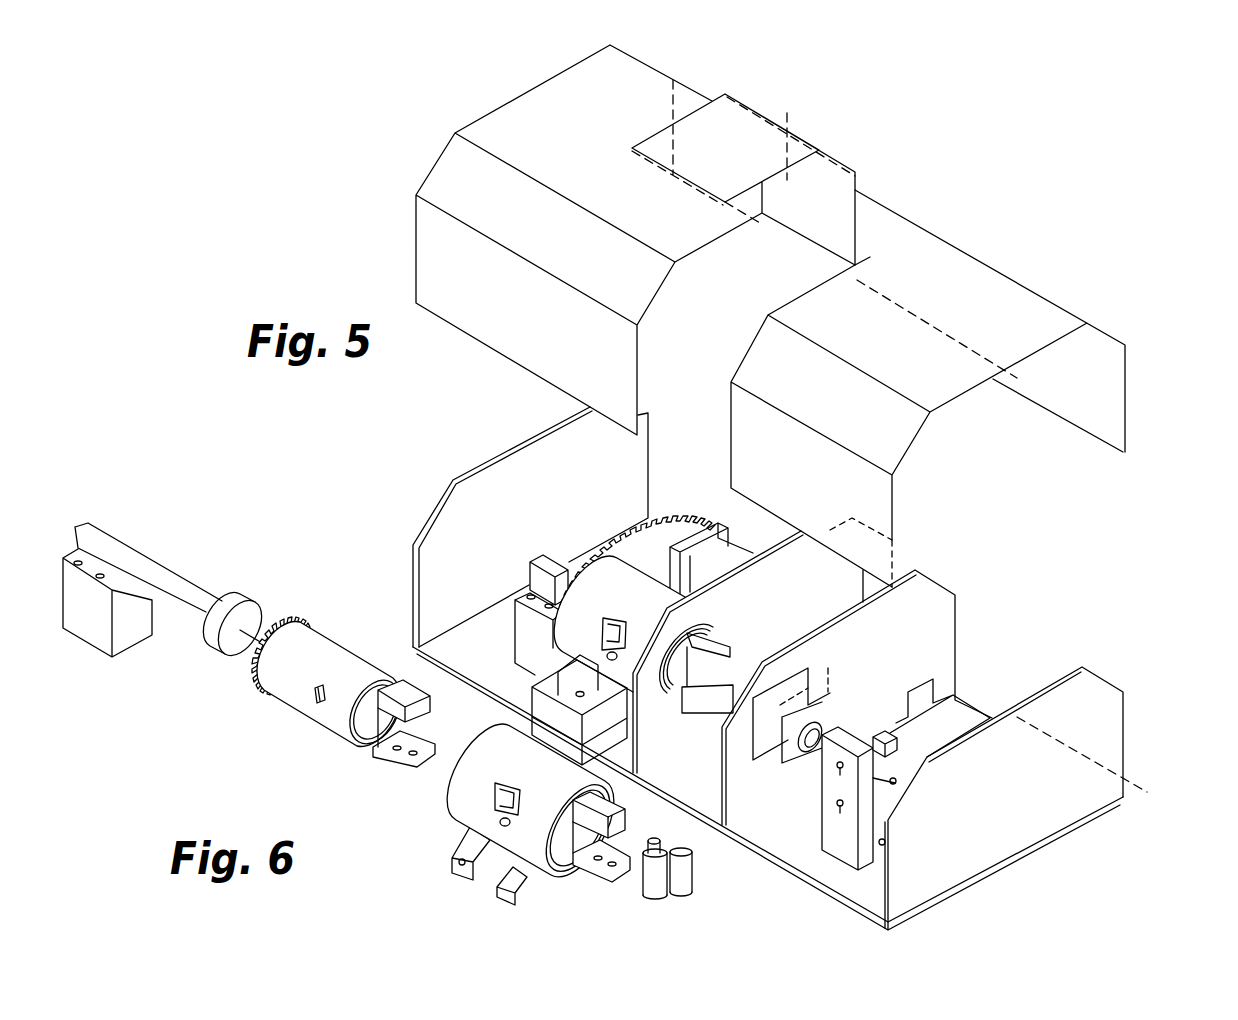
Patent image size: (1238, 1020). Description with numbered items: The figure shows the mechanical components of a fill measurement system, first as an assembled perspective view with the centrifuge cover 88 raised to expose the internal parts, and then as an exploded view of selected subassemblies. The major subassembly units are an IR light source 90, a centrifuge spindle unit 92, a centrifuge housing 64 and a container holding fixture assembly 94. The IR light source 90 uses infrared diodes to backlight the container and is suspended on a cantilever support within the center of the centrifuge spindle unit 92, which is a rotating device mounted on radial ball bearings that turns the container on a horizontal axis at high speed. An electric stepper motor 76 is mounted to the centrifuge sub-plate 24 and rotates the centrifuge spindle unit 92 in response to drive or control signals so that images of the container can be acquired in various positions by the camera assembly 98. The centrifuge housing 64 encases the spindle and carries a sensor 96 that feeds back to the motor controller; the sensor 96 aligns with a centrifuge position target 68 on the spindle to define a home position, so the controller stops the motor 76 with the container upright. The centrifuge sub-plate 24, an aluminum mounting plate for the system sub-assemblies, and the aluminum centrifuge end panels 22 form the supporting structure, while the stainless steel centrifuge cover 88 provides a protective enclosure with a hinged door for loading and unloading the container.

In FIG. 5, the centrifuge end panel 22 is at (412, 598).
In FIG. 5, the centrifuge sub-plate 24 is at (813, 883).
In FIG. 6, the centrifuge housing 64 is at (516, 826).
In FIG. 6, the centrifuge position target 68 is at (318, 703).
In FIG. 5, the electric stepper motor 76 is at (727, 558).
In FIG. 5, the centrifuge cover 88 is at (892, 522).
In FIG. 6, the IR light source 90 is at (205, 645).
In FIG. 6, the centrifuge spindle unit 92 is at (288, 697).
In FIG. 6, the container holding fixture assembly 94 is at (387, 763).
In FIG. 6, the sensor 96 is at (508, 838).
In FIG. 5, the camera assembly 98 is at (905, 745).